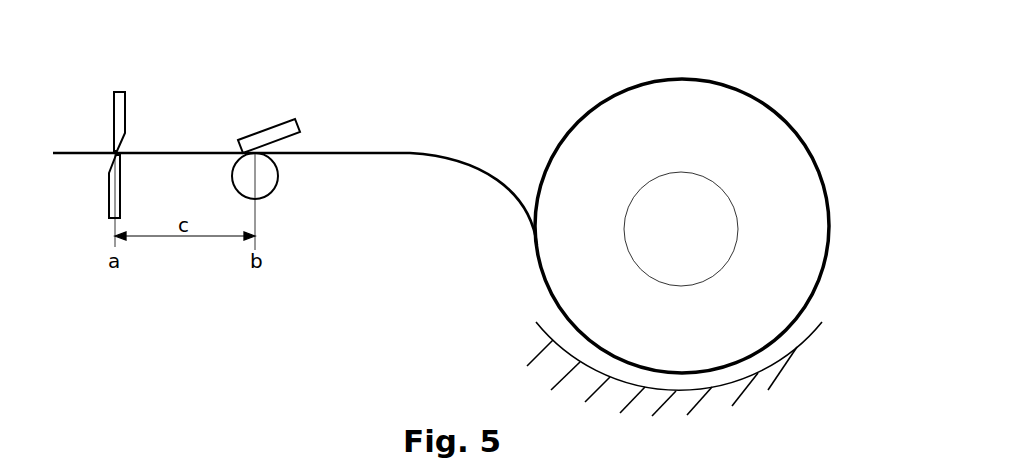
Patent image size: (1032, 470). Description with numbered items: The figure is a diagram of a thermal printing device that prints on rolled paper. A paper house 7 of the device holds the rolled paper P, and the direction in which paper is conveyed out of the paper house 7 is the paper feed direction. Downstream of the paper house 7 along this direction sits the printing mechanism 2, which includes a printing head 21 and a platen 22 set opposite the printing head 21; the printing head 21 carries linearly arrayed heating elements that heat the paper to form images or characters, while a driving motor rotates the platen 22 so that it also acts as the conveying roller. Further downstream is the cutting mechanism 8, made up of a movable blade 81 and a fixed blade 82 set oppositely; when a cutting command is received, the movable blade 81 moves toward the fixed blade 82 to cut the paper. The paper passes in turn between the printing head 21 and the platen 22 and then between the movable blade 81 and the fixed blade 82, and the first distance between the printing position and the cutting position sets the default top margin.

The cutting mechanism 8 is at (111, 133).
The fixed blade 82 is at (141, 133).
The movable blade 81 is at (117, 180).
The printing mechanism 2 is at (291, 128).
The printing head 21 is at (286, 135).
The platen 22 is at (256, 180).
The rolled paper P is at (772, 182).
The paper house 7 is at (841, 311).